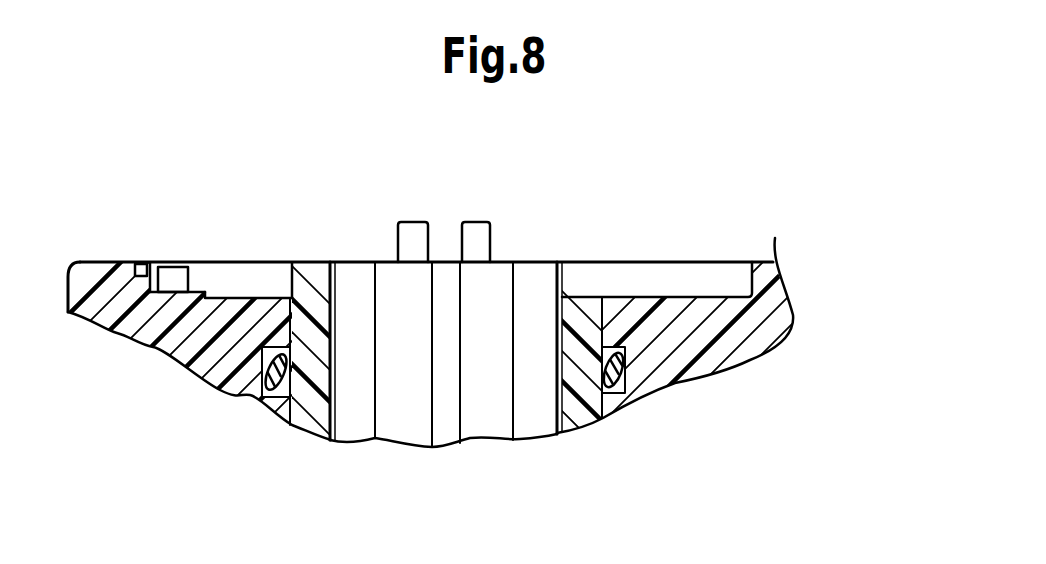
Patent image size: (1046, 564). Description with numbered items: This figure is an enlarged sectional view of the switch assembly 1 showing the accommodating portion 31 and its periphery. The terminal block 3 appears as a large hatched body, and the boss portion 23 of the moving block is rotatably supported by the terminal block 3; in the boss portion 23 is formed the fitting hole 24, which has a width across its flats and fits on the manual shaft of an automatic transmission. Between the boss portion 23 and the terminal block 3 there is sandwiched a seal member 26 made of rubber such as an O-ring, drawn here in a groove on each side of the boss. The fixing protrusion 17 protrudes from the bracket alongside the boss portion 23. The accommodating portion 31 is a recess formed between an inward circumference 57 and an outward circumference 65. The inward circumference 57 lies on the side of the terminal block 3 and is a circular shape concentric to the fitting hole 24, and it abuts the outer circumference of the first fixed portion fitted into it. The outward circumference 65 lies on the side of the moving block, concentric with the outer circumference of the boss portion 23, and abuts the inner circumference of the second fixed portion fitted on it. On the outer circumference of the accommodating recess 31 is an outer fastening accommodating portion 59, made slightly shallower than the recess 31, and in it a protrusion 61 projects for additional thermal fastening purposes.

The assembly 1 is at (730, 178).
The terminal block 3 is at (759, 313).
The fixing protrusion 17 is at (577, 408).
The boss portion 23 is at (543, 262).
The fitting hole 24 is at (511, 303).
The seal member 26 is at (262, 398).
The accommodating portion 31 is at (237, 298).
The inward circumference 57 is at (174, 280).
The outer fastening accommodating portion 59 is at (140, 262).
The protrusion 61 is at (150, 264).
The outward circumference 65 is at (292, 282).